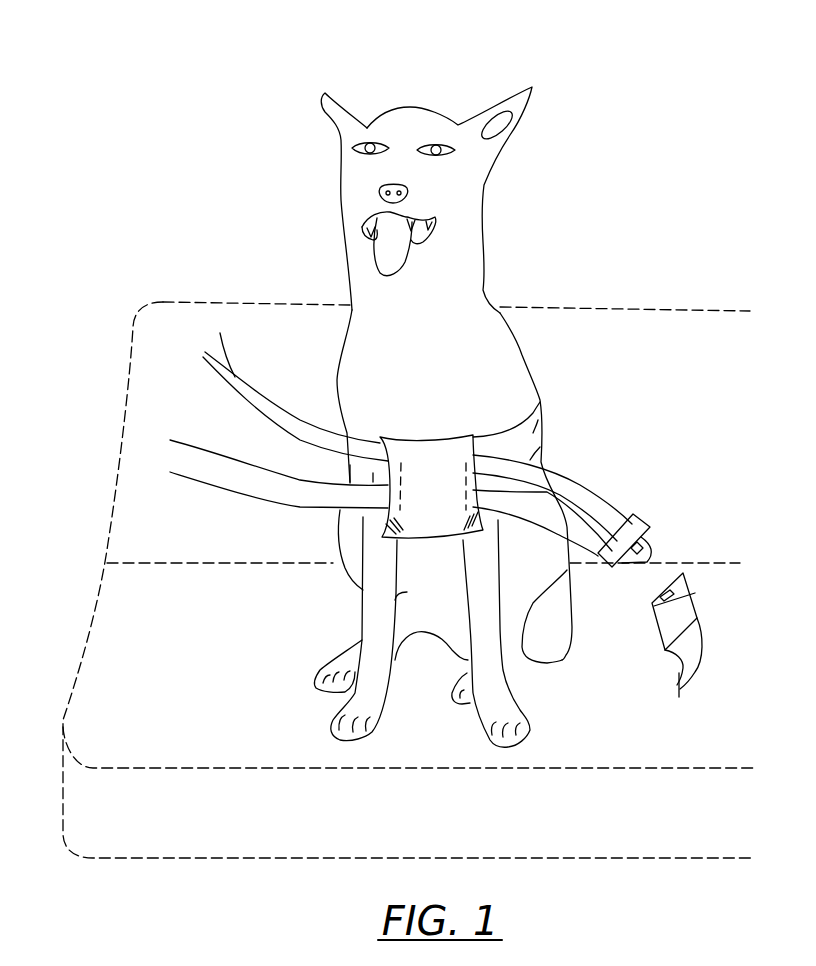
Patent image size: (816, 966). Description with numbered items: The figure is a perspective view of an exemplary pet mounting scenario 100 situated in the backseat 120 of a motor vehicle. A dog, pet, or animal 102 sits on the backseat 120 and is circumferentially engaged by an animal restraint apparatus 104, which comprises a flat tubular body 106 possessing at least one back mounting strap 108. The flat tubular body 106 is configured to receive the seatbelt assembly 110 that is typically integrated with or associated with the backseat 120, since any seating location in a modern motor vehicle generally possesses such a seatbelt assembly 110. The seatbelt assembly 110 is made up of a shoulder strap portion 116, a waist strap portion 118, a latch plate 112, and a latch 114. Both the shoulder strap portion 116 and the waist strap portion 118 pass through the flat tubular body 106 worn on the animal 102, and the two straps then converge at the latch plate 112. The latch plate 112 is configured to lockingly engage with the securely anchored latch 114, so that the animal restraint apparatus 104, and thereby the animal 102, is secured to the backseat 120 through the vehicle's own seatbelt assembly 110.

The pet mounting scenario 100 is at (127, 68).
The animal 102 is at (393, 356).
The animal restraint apparatus 104 is at (434, 408).
The flat tubular body 106 is at (410, 519).
The back mounting strap 108 is at (543, 410).
The seatbelt assembly 110 is at (612, 462).
The latch plate 112 is at (640, 517).
The latch 114 is at (680, 613).
The shoulder strap portion 116 is at (205, 352).
The waist strap portion 118 is at (190, 463).
The backseat 120 is at (163, 826).